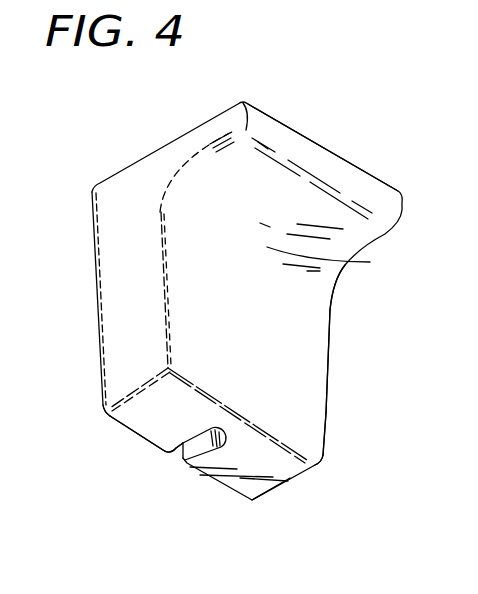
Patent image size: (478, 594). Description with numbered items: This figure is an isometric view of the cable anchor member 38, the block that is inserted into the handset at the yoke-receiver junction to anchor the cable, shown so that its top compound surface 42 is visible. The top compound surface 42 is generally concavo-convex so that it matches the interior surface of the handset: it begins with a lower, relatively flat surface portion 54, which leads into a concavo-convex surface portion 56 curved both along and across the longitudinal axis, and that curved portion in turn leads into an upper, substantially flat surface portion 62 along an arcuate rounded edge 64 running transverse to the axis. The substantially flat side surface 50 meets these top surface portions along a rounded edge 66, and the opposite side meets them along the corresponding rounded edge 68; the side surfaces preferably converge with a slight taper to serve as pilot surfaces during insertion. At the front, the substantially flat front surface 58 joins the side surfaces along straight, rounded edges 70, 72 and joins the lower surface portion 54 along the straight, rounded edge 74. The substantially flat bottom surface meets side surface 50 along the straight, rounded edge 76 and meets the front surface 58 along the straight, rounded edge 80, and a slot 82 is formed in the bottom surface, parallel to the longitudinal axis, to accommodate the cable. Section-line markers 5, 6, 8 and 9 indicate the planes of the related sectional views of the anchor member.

The cable anchor member 38 is at (138, 148).
The top compound surface 42 is at (290, 340).
The side surface 50 is at (103, 285).
The lower, relatively flat surface portion 54 is at (308, 417).
The concavo-convex surface portion 56 is at (322, 258).
The front surface 58 is at (277, 480).
The upper, substantially flat surface portion 62 is at (357, 178).
The arcuate rounded edge 64 is at (290, 170).
The rounded edge 66 is at (168, 263).
The rounded edge 68 is at (332, 307).
The straight, rounded edge 70 is at (138, 393).
The straight, rounded edge 72 is at (308, 457).
The straight, rounded edge 74 is at (208, 409).
The straight, rounded edge 76 is at (101, 360).
The straight, rounded edge 80 is at (227, 487).
The slot 82 is at (187, 458).
The section line 5- 5 is at (43, 443).
The section line 6- 6 is at (222, 90).
The section line 8- 8 is at (163, 383).
The section line 9- 9 is at (178, 88).